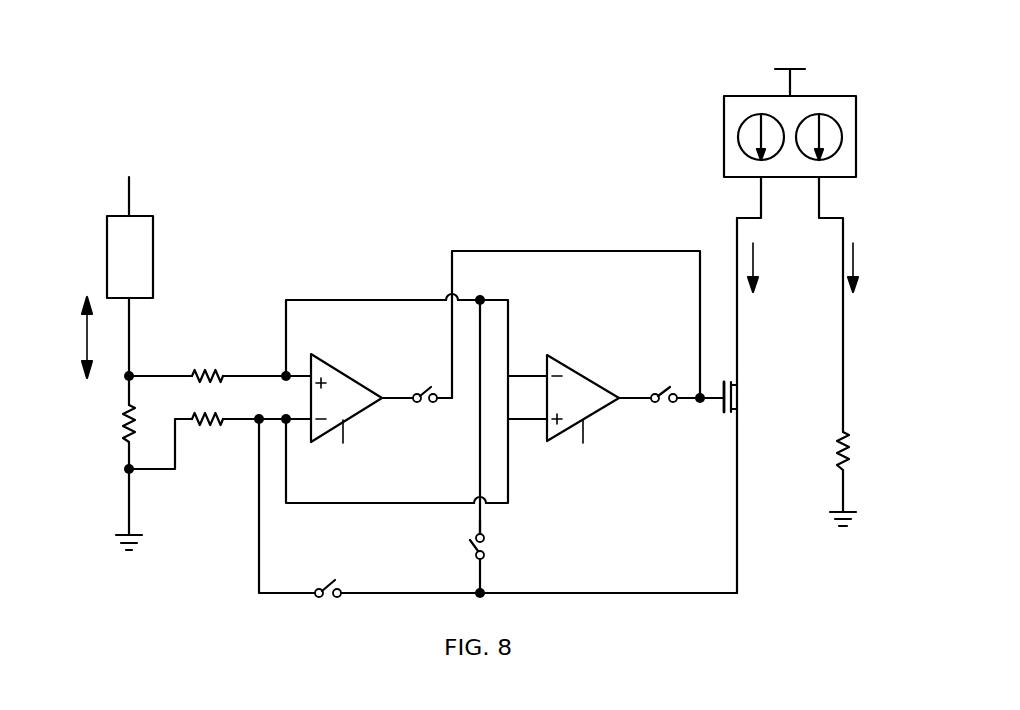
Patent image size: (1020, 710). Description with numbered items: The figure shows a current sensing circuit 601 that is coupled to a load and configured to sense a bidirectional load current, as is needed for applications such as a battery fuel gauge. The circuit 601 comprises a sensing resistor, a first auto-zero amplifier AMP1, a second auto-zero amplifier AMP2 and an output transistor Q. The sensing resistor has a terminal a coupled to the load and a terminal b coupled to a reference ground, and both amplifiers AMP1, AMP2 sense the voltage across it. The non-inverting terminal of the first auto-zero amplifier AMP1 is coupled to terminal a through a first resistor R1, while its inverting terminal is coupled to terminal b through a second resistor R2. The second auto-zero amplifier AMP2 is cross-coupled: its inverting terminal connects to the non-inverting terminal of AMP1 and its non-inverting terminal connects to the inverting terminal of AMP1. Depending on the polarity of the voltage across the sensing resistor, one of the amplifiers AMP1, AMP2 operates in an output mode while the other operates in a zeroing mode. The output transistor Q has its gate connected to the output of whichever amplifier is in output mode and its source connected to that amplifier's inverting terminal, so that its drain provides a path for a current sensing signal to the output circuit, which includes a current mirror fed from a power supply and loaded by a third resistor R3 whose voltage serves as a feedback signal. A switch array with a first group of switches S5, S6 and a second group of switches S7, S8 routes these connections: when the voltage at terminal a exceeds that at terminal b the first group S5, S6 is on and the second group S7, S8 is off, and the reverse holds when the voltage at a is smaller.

The current sensing circuit 601 is at (447, 155).
The first resistor R1 is at (220, 356).
The second resistor R2 is at (220, 441).
The third resistor R3 is at (863, 472).
The switch S5 is at (330, 576).
The switch S6 is at (417, 416).
The switch S7 is at (458, 556).
The switch S8 is at (659, 378).
The output transistor Q is at (734, 397).
The first auto-zero amplifier AMP1 is at (346, 398).
The second auto-zero amplifier AMP2 is at (583, 399).